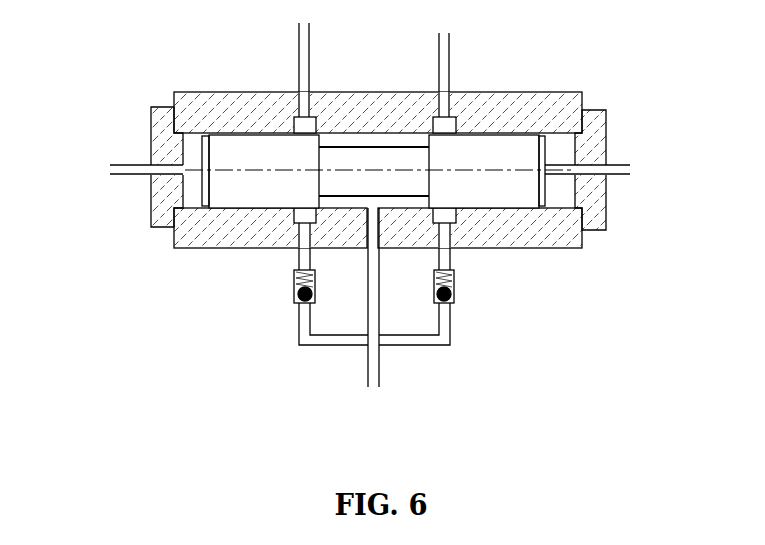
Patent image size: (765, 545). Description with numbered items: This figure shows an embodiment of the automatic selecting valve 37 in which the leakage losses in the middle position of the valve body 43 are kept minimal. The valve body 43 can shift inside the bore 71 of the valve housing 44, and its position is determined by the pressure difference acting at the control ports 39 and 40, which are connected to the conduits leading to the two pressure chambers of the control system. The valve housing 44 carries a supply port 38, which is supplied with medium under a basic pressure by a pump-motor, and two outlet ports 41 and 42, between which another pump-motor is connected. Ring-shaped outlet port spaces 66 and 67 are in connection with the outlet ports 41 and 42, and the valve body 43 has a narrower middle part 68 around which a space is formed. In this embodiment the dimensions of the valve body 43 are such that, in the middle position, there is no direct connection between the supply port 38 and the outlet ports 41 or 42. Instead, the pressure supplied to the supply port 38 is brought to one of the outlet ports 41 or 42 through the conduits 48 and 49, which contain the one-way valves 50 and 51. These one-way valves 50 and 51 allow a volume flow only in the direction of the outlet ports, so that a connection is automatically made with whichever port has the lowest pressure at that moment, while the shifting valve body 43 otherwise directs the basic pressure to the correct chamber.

The automatic selecting valve 37 is at (559, 47).
The supply port 38 is at (364, 254).
The control port 39 is at (612, 180).
The control port 40 is at (145, 178).
The outlet port 41 is at (450, 90).
The outlet port 42 is at (293, 88).
The valve body 43 is at (235, 188).
The valve housing 44 is at (182, 82).
The conduit 48 is at (453, 352).
The conduit 49 is at (312, 350).
The one-way valve 50 is at (460, 308).
The one-way valve 51 is at (260, 303).
The outlet port space 66 is at (447, 217).
The outlet port space 67 is at (268, 252).
The narrower middle part 68 is at (470, 252).
The bore 71 is at (157, 242).